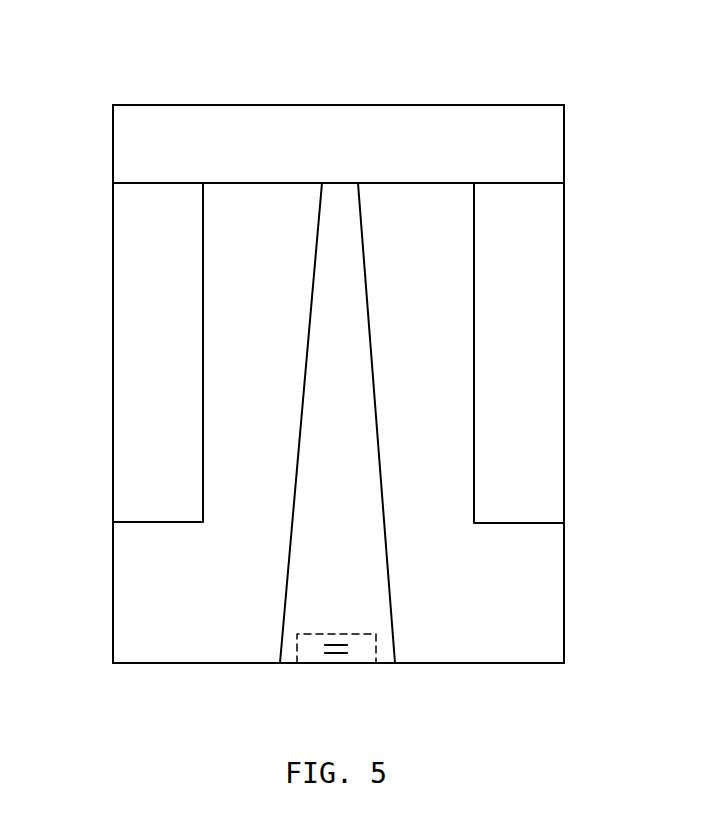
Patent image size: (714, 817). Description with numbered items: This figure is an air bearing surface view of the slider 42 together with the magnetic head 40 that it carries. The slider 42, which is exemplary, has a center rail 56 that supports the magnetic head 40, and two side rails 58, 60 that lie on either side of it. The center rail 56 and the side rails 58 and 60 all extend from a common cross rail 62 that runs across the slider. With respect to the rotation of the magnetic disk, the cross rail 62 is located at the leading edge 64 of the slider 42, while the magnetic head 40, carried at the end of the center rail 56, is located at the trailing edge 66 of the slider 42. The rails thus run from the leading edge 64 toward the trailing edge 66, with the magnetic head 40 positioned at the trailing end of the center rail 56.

The slider 42 is at (112, 609).
The cross rail 62 is at (258, 118).
The leading edge 64 is at (443, 105).
The side rail 58 is at (130, 262).
The side rail 60 is at (547, 264).
The center rail 56 is at (322, 296).
The magnetic head 40 is at (316, 658).
The trailing edge 66 is at (460, 665).